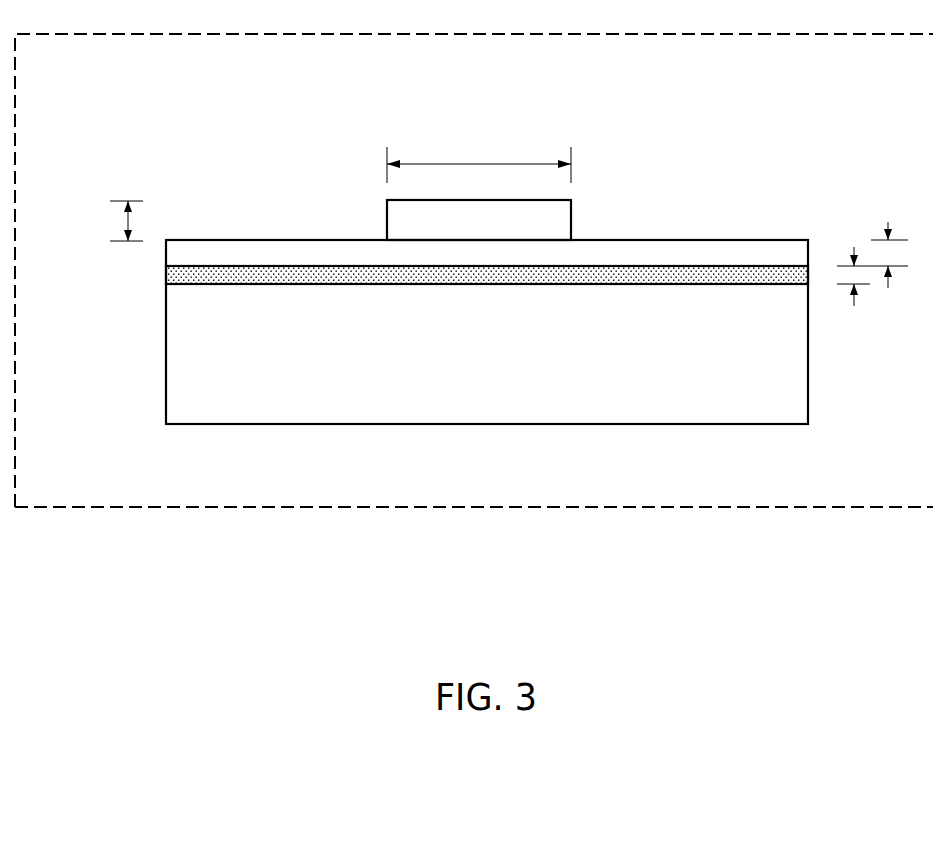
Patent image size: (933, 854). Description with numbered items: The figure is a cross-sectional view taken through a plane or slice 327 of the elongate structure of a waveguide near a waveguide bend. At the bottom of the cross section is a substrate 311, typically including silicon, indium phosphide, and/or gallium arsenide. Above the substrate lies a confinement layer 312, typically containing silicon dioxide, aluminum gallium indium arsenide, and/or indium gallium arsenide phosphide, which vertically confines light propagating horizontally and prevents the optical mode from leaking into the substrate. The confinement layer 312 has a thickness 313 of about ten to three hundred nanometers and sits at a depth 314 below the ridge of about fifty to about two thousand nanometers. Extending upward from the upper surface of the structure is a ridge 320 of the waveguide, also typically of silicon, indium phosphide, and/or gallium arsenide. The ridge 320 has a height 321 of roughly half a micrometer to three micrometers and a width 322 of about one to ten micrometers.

The slice 327 is at (72, 71).
The substrate 311 is at (166, 348).
The confinement layer 312 is at (166, 268).
The thickness 313 is at (853, 295).
The depth 314 is at (872, 235).
The ridge 320 is at (387, 220).
The height 321 is at (114, 221).
The width 322 is at (479, 154).